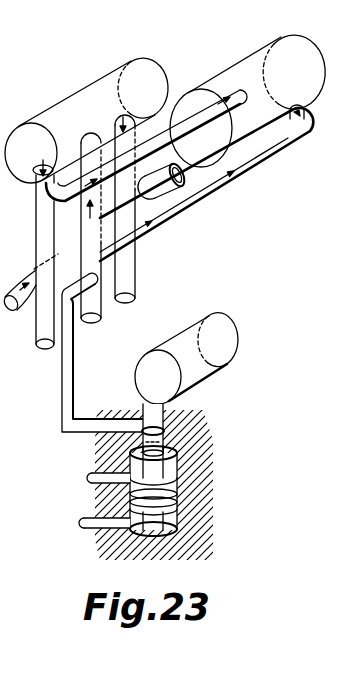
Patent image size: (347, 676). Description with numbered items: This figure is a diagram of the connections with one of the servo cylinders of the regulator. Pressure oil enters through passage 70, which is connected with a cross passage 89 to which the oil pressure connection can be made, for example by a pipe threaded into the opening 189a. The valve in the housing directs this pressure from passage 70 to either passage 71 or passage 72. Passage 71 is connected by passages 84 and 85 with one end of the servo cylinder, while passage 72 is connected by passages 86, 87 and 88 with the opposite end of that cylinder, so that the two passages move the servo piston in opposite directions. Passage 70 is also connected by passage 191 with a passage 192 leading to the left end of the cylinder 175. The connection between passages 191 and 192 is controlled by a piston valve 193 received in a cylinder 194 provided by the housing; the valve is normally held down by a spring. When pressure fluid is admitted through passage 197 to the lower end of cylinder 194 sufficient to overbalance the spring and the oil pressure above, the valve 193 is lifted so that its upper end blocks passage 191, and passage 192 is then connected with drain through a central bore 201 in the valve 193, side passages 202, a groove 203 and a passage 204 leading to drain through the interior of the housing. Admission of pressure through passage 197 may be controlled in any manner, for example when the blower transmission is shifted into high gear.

The passage 70 is at (100, 313).
The passage 71 is at (126, 279).
The passage 72 is at (38, 232).
The passage 84 is at (245, 161).
The passage 85 is at (306, 114).
The passage 86 is at (48, 197).
The passage 87 is at (163, 143).
The passage 88 is at (241, 103).
The cross passage 89 is at (34, 268).
The nozzle 189a is at (183, 186).
The cylinder 175 is at (212, 368).
The passage 191 is at (79, 291).
The passage 192 is at (165, 412).
The piston valve 193 is at (187, 472).
The cylinder 194 is at (180, 512).
The passage 197 is at (108, 532).
The central bore 201 is at (164, 432).
The side passages 202 is at (108, 490).
The groove 203 is at (180, 490).
The passage 204 is at (103, 473).